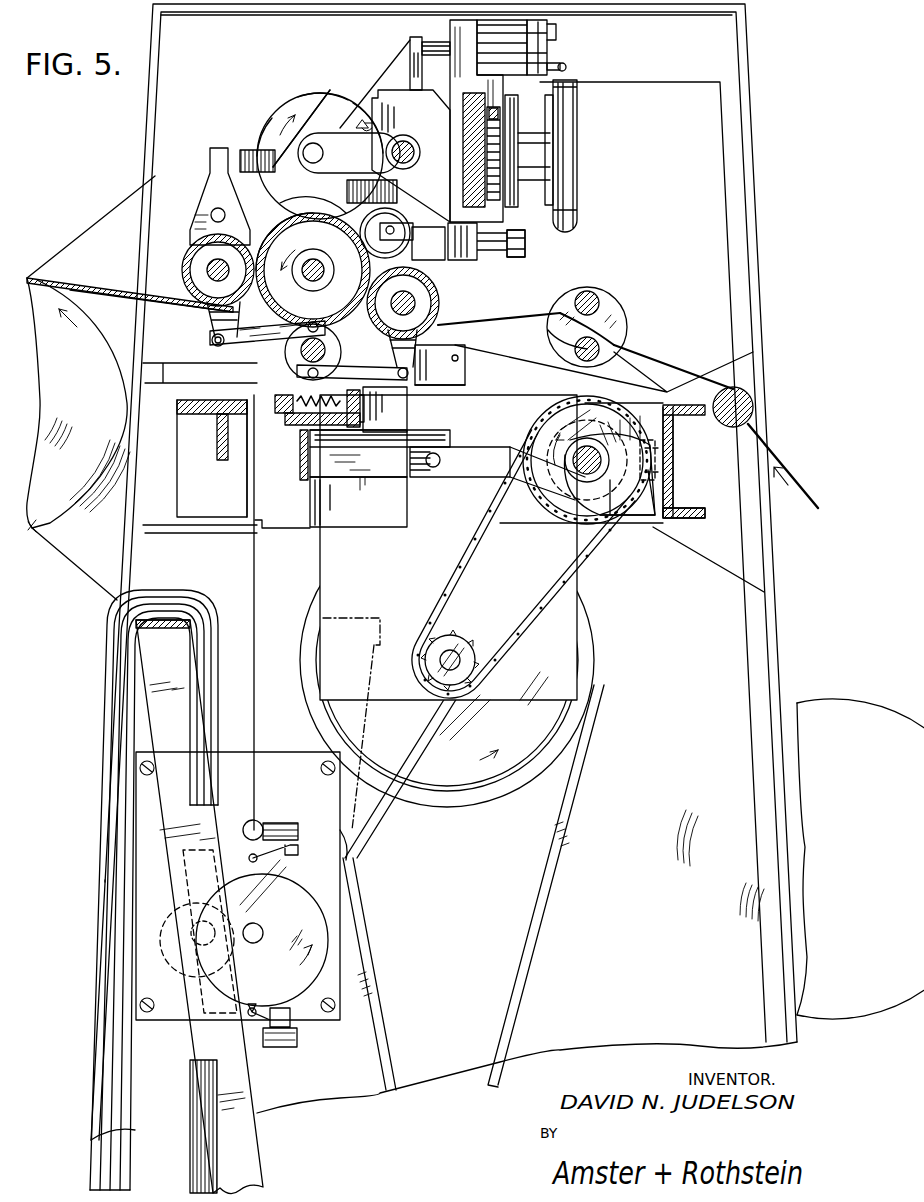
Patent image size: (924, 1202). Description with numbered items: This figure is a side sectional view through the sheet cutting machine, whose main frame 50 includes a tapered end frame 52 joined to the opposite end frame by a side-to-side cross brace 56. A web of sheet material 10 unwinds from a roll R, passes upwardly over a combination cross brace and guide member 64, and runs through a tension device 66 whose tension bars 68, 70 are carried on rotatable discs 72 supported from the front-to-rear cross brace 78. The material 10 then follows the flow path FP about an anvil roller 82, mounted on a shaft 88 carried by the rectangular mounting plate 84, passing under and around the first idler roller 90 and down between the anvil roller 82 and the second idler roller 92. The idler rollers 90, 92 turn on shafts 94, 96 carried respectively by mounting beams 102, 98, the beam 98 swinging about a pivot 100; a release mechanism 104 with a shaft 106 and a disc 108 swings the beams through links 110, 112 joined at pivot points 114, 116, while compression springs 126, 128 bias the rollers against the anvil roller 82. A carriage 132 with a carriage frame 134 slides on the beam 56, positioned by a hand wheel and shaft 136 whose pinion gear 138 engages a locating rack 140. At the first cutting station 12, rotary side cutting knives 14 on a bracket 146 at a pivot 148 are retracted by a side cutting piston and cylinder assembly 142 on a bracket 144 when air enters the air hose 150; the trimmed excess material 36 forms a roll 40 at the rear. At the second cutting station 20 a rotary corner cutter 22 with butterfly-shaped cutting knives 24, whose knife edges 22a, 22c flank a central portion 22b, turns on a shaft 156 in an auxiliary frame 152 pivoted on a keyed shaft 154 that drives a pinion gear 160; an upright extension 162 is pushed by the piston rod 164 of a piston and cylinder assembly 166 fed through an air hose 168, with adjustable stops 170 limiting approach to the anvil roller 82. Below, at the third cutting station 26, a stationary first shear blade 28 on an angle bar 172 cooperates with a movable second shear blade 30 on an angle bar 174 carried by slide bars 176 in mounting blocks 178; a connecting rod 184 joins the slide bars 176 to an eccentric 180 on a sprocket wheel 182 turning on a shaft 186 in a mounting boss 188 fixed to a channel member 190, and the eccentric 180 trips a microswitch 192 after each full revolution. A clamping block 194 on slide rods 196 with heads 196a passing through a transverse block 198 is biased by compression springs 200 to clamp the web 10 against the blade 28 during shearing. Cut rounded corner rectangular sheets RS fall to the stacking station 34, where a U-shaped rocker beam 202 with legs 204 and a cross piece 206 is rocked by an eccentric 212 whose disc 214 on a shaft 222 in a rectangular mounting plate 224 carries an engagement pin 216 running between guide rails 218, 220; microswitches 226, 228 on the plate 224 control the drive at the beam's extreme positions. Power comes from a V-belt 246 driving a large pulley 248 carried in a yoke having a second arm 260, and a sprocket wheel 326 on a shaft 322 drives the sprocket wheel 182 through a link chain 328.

The web of sheet material 10 is at (806, 488).
The first cutting station 12 is at (352, 250).
The rotary side cutting knives 14 is at (333, 262).
The second cutting station 20 is at (298, 200).
The rotary corner cutter 22 is at (292, 98).
The cutting knife 22a is at (370, 106).
The cam roller portion 22b is at (328, 92).
The cutting knife 22c is at (268, 110).
The butterfly-shaped cutting knives 24 is at (277, 92).
The third cutting station 26 is at (250, 428).
The first shear blade 28 is at (214, 407).
The second shear blade 30 is at (288, 416).
The stacking station 34 is at (92, 693).
The excess material 36 is at (70, 283).
The roll of excess material 40 is at (32, 528).
The main frame 50 is at (760, 47).
The tapered end frame 52 is at (765, 82).
The cross brace 56 is at (477, 92).
The combination cross brace and guide member 64 is at (750, 394).
The tension device 66 is at (622, 320).
The tension bar 68 is at (598, 298).
The tension bar 70 is at (576, 350).
The rotatable disc 72 is at (627, 335).
The front-to-rear cross brace 78 is at (716, 564).
The anvil roller 82 is at (277, 222).
The rectangular mounting plate 84 is at (160, 88).
The anvil roller shaft 88 is at (307, 278).
The first idler roller 90 is at (426, 336).
The second idler roller 92 is at (183, 270).
The idler roller shaft 94 is at (440, 303).
The idler roller shaft 96 is at (207, 268).
The mounting beam 98 is at (209, 158).
The pivot 100 is at (211, 215).
The mounting beam 102 is at (432, 372).
The release mechanism 104 is at (278, 362).
The release shaft 106 is at (299, 362).
The disc 108 is at (330, 350).
The link 110 is at (210, 330).
The link 112 is at (400, 400).
The pivot point 114 is at (211, 341).
The pivot point 116 is at (433, 386).
The compression spring 126 is at (255, 150).
The compression spring 128 is at (346, 191).
The carriage 132 is at (531, 94).
The carriage frame 134 is at (495, 76).
The hand wheel and shaft 136 is at (580, 200).
The pinion gear 138 is at (501, 178).
The locating rack 140 is at (500, 114).
The side cutting piston and cylinder assembly 142 is at (538, 244).
The bracket 144 is at (430, 243).
The bracket 146 is at (405, 228).
The pivot 148 is at (393, 227).
The air hose 150 is at (472, 262).
The auxiliary frame 152 is at (392, 100).
The keyed shaft 154 is at (416, 150).
The corner cutter shaft 156 is at (324, 155).
The pinion gear 160 is at (396, 126).
The upright extension 162 is at (414, 46).
The piston rod 164 is at (447, 58).
The piston and cylinder assembly 166 is at (558, 35).
The air hose 168 is at (567, 66).
The adjustable stops 170 is at (335, 133).
The angle bar 172 is at (219, 456).
The angle bar 174 is at (305, 481).
The slide bars 176 is at (386, 470).
The mounting blocks 178 is at (450, 441).
The eccentric 180 is at (625, 416).
The sprocket wheel 182 is at (590, 402).
The connecting rod 184 is at (497, 455).
The sprocket shaft 186 is at (572, 480).
The mounting boss 188 is at (655, 517).
The channel member 190 is at (700, 520).
The microswitch 192 is at (662, 470).
The clamping block 194 is at (300, 426).
The slide rods 196 is at (340, 430).
The heads 196a is at (380, 444).
The transverse block 198 is at (336, 416).
The compression springs 200 is at (341, 398).
The rocker beam 202 is at (263, 1168).
The legs 204 is at (258, 1104).
The cross piece 206 is at (168, 629).
The eccentric 212 is at (338, 944).
The disc 214 is at (297, 887).
The engagement pin 216 is at (190, 960).
The guide rail 218 is at (188, 940).
The guide rail 220 is at (212, 868).
The shaft 222 is at (253, 943).
The rectangular mounting plate 224 is at (358, 836).
The microswitch 226 is at (282, 822).
The microswitch 228 is at (281, 1048).
The V-belt 246 is at (574, 795).
The large pulley 248 is at (512, 790).
The second arm of yoke 260 is at (578, 647).
The shaft 322 is at (458, 664).
The sprocket wheel 326 is at (464, 630).
The link chain 328 is at (560, 590).
The flow path FP is at (741, 382).
The roll R is at (725, 968).
The rounded corner rectangular sheets RS is at (105, 880).